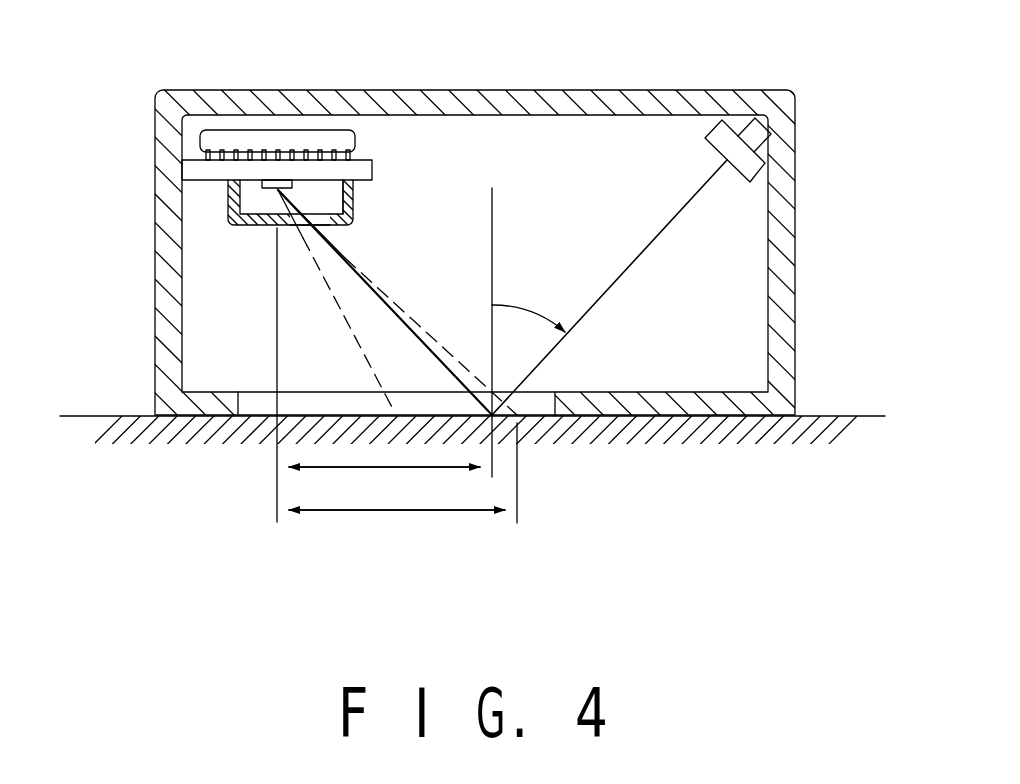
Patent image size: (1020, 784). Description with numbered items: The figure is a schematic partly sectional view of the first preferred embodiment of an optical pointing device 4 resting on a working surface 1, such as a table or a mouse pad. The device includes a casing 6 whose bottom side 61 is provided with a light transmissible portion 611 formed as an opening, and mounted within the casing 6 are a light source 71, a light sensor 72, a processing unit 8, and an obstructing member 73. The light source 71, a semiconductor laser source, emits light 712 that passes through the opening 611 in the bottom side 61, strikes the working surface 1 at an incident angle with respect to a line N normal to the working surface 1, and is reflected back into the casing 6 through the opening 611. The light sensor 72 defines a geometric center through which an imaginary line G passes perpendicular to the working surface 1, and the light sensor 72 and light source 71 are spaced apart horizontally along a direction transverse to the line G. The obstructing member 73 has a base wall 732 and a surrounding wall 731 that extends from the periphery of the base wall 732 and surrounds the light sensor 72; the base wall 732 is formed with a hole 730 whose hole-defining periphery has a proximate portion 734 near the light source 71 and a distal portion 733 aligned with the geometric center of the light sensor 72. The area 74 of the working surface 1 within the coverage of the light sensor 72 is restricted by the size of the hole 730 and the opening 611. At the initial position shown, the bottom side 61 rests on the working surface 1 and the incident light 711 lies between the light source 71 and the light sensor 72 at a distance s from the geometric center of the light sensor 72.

The working surface 1 is at (122, 415).
The optical pointing device 4 is at (850, 115).
The casing 6 is at (703, 89).
The bottom side 61 is at (736, 418).
The light transmissible portion 611 is at (260, 403).
The processing unit 8 is at (218, 137).
The light source 71 is at (757, 130).
The incident light 711 is at (503, 419).
The light 712 is at (634, 265).
The light sensor 72 is at (265, 183).
The obstructing member 73 is at (220, 197).
The hole 730 is at (280, 192).
The surrounding wall 731 is at (355, 206).
The base wall 732 is at (332, 227).
The distal portion 733 is at (287, 224).
The proximate portion 734 is at (317, 216).
The area 74 is at (403, 473).
The imaginary line G is at (276, 278).
The normal line N is at (492, 248).
The distance s is at (378, 375).